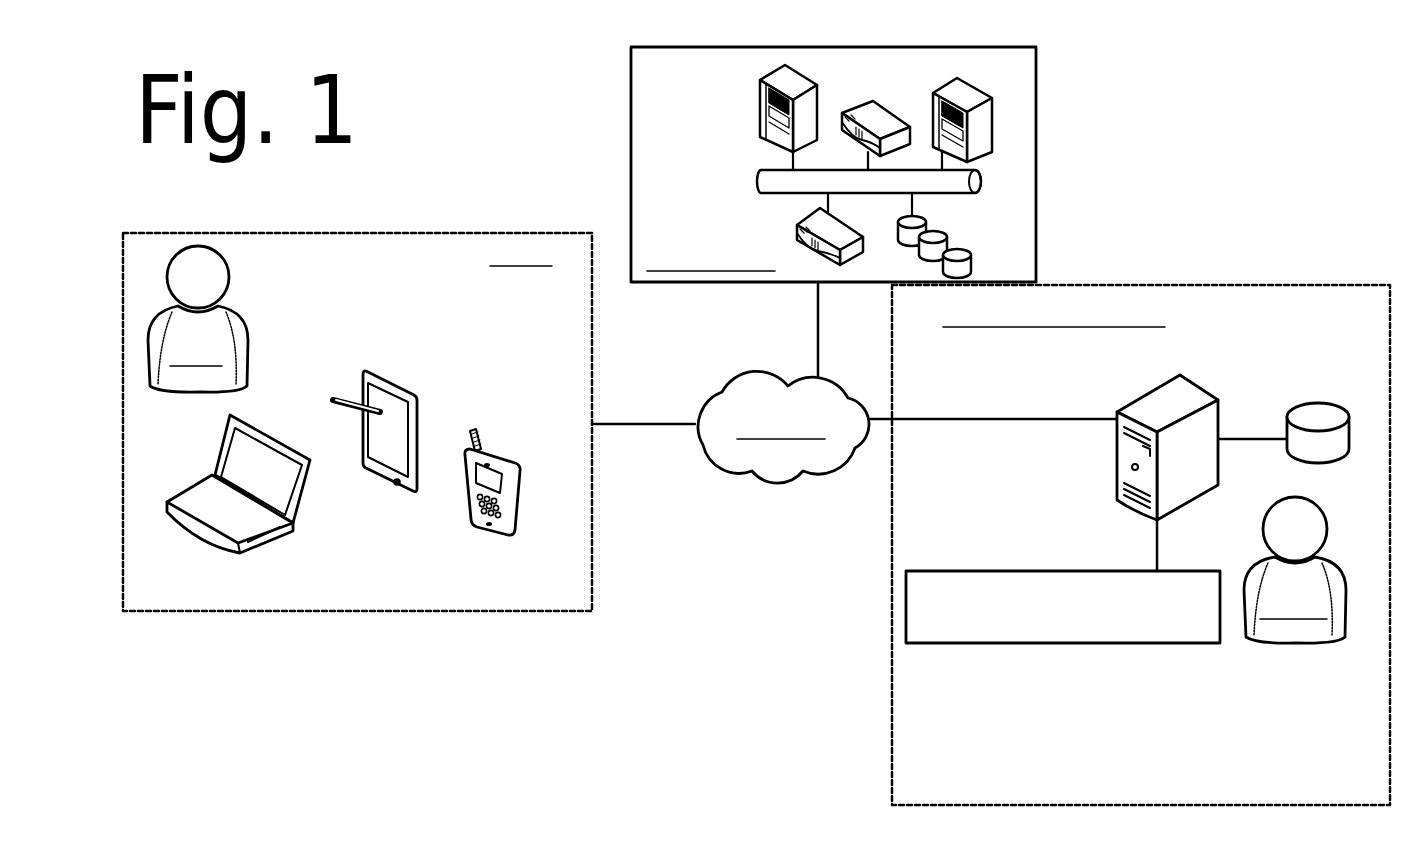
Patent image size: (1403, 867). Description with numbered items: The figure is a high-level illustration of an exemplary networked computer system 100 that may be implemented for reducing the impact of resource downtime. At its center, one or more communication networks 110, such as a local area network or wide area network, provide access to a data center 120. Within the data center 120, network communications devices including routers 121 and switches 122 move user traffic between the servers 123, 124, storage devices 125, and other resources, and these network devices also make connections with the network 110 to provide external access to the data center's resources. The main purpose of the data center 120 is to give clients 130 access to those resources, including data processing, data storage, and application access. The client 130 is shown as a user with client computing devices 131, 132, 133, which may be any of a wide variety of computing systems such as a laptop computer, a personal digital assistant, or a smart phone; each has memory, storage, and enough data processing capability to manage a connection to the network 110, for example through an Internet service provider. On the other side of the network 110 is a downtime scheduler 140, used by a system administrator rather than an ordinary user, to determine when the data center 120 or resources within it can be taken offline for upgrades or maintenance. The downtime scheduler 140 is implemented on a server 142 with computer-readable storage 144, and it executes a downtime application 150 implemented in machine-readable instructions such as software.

The networked computer system 100 is at (1147, 122).
The communication network 110 is at (762, 372).
The data center 120 is at (631, 148).
The router 121 is at (797, 228).
The switch 122 is at (867, 99).
The server 123 is at (808, 80).
The server 124 is at (968, 85).
The storage device 125 is at (947, 234).
The client 130 is at (292, 233).
The client computing device 131 is at (240, 553).
The client computing device 132 is at (420, 398).
The client computing device 133 is at (493, 537).
The downtime scheduler 140 is at (1192, 285).
The server 142 is at (1177, 375).
The computer-readable storage 144 is at (1322, 403).
The downtime application 150 is at (1043, 570).